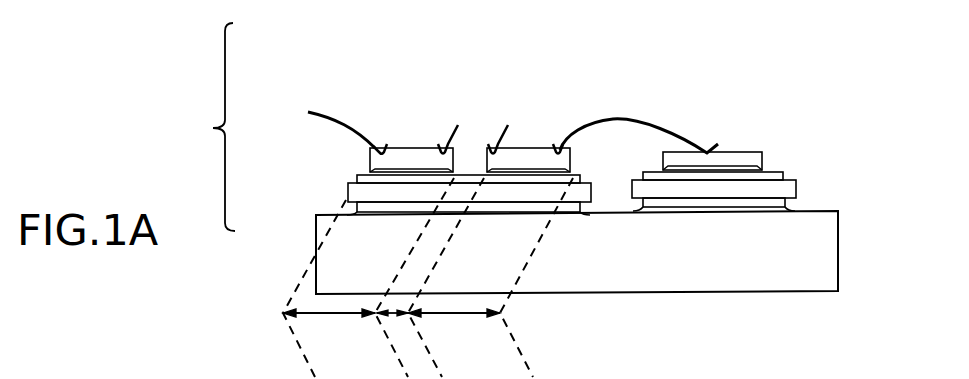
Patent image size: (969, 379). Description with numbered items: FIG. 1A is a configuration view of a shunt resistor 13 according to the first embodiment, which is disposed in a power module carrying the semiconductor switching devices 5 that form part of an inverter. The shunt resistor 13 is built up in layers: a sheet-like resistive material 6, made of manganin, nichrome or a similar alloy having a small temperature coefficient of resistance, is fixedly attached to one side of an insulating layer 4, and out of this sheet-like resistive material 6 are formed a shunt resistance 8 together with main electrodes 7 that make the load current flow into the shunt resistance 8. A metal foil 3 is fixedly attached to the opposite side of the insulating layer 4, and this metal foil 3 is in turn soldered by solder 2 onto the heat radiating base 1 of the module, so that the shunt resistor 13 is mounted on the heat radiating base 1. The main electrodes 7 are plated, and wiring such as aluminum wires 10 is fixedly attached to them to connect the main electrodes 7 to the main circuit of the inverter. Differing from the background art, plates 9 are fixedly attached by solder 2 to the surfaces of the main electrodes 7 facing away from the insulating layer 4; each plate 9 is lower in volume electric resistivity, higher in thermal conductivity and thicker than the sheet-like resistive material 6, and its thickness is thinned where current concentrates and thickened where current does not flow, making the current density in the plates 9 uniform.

The heat radiating base 1 is at (755, 262).
The solder 2 is at (368, 174).
The metal foil 3 is at (350, 207).
The insulating layer 4 is at (347, 193).
The semiconductor switching device 5 is at (742, 152).
The sheet-like resistive material 6 is at (357, 178).
The main electrode 7 is at (335, 314).
The shunt resistance 8 is at (397, 314).
The plate 9 is at (525, 145).
The aluminum wire 10 is at (628, 120).
The shunt resistor 13 is at (206, 127).